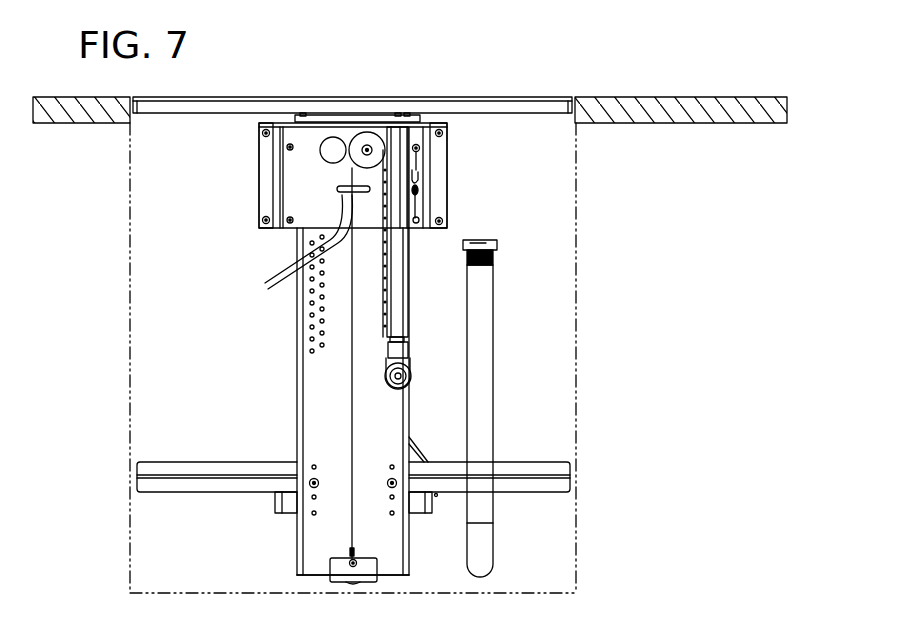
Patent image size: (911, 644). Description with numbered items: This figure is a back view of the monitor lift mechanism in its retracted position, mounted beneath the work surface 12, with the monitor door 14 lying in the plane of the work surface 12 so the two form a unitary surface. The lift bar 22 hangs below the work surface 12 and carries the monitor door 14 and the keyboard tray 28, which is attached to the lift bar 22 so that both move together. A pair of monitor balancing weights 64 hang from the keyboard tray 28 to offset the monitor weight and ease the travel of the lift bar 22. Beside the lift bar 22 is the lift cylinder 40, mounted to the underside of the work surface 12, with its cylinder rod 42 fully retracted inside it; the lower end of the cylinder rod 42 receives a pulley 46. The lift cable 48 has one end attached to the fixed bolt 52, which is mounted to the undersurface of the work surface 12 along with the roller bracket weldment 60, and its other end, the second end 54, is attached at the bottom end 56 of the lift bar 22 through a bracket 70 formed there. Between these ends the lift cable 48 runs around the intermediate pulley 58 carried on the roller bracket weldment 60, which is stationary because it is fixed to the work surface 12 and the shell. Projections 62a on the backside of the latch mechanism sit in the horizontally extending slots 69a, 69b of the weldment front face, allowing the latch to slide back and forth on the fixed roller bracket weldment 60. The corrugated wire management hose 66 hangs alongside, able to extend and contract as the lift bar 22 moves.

The work surface 12 is at (690, 100).
The monitor door 14 is at (519, 103).
The lift bar 22 is at (313, 391).
The keyboard tray 28 is at (158, 463).
The lift cylinder 40 is at (400, 270).
The cylinder rod 42 is at (397, 348).
The pulley 46 is at (410, 388).
The lift cable 48 is at (353, 423).
The fixed bolt 52 is at (413, 165).
The second end 54 is at (413, 188).
The bottom end 56 is at (317, 577).
The intermediate pulley 58 is at (382, 128).
The roller bracket weldment 60 is at (440, 177).
The projections 62a is at (350, 128).
The monitor balancing weights 64 is at (275, 500).
The wire management hose 66 is at (483, 408).
The slot 69a is at (333, 167).
The slot 69b is at (365, 189).
The bracket 70 is at (370, 570).